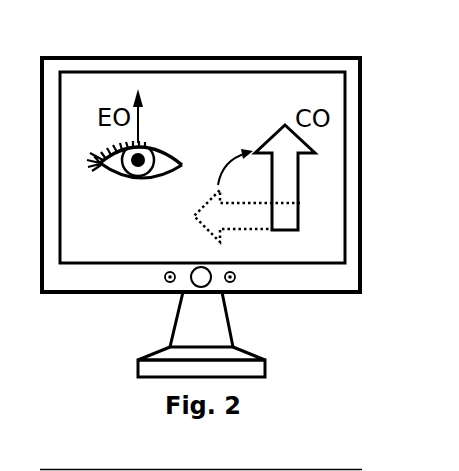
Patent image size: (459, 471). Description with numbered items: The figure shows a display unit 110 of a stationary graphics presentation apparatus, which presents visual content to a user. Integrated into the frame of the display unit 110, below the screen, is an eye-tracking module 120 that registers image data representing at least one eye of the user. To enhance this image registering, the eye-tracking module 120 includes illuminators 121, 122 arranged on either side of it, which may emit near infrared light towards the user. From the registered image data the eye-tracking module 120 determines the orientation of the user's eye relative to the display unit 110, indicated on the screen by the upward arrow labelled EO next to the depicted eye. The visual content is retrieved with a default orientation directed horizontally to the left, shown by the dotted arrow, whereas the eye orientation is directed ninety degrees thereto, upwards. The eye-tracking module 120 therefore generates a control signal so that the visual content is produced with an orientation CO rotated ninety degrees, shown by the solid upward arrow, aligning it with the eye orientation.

The display unit 110 is at (201, 147).
The eye-tracking module 120 is at (137, 317).
The illuminator 121 is at (111, 302).
The illuminator 122 is at (276, 305).